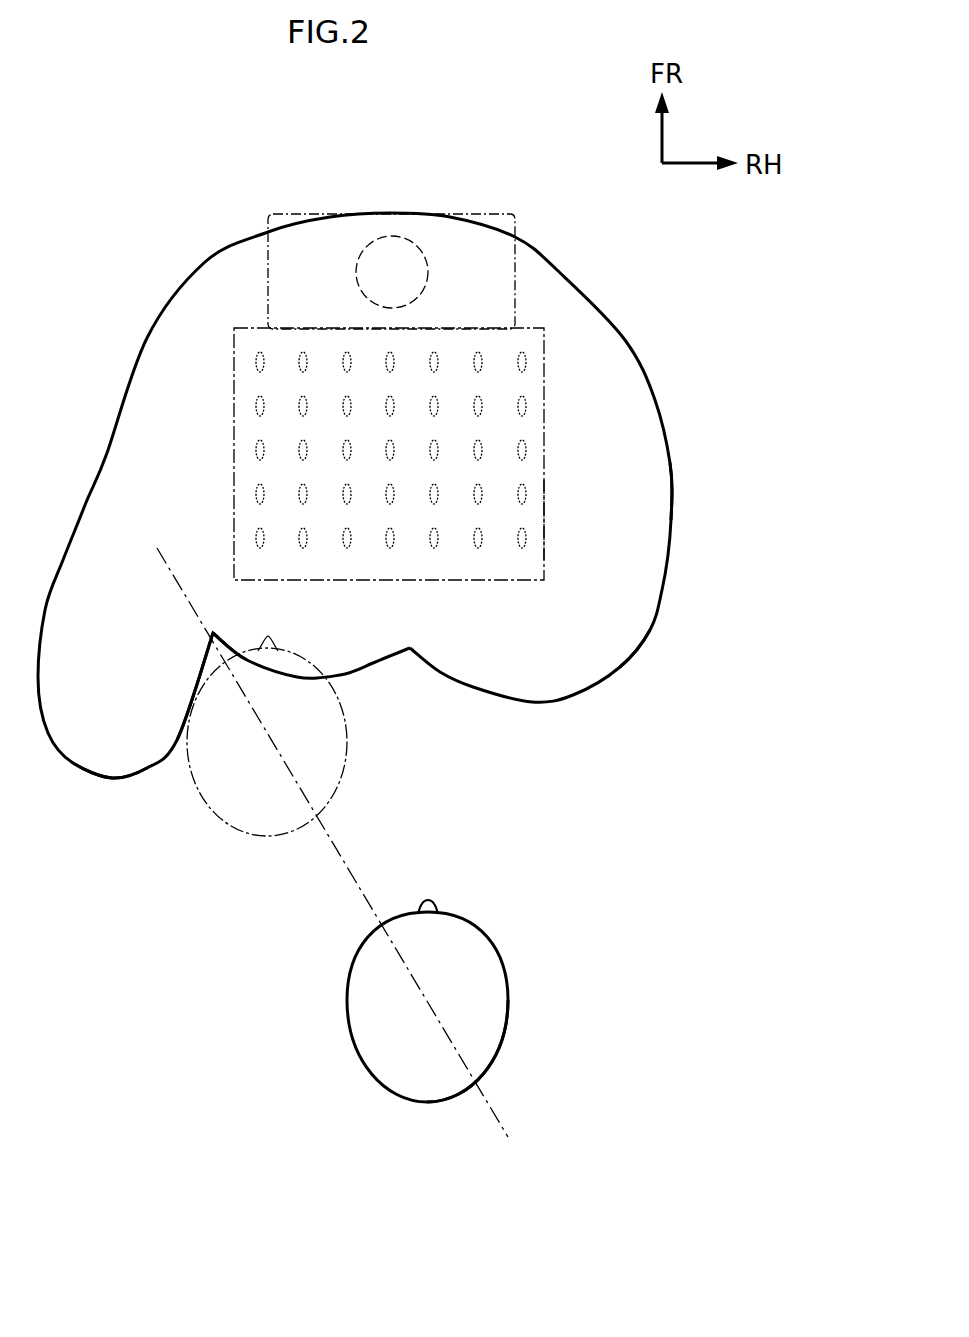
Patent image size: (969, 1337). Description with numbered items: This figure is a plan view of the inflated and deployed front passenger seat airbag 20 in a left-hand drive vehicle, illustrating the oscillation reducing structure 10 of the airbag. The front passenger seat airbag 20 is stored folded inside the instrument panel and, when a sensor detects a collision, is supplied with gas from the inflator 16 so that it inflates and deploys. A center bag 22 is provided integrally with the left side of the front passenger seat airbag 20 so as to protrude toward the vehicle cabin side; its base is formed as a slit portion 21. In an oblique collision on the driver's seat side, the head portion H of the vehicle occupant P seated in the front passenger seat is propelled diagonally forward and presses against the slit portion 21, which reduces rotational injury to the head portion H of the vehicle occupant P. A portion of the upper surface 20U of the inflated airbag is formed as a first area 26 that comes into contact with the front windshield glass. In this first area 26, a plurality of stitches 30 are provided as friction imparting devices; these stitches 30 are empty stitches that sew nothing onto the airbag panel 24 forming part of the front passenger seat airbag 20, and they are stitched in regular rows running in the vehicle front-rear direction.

The oscillation reducing structure 10 is at (567, 380).
The inflator 16 is at (388, 236).
The front passenger seat airbag 20 is at (206, 264).
The upper surface 20U is at (619, 629).
The slit portion 21 is at (216, 640).
The center bag 22 is at (108, 755).
The airbag panel 24 is at (670, 463).
The first area 26 is at (544, 479).
The stitches 30 is at (252, 362).
The head portion H is at (347, 720).
The vehicle occupant P is at (508, 1003).